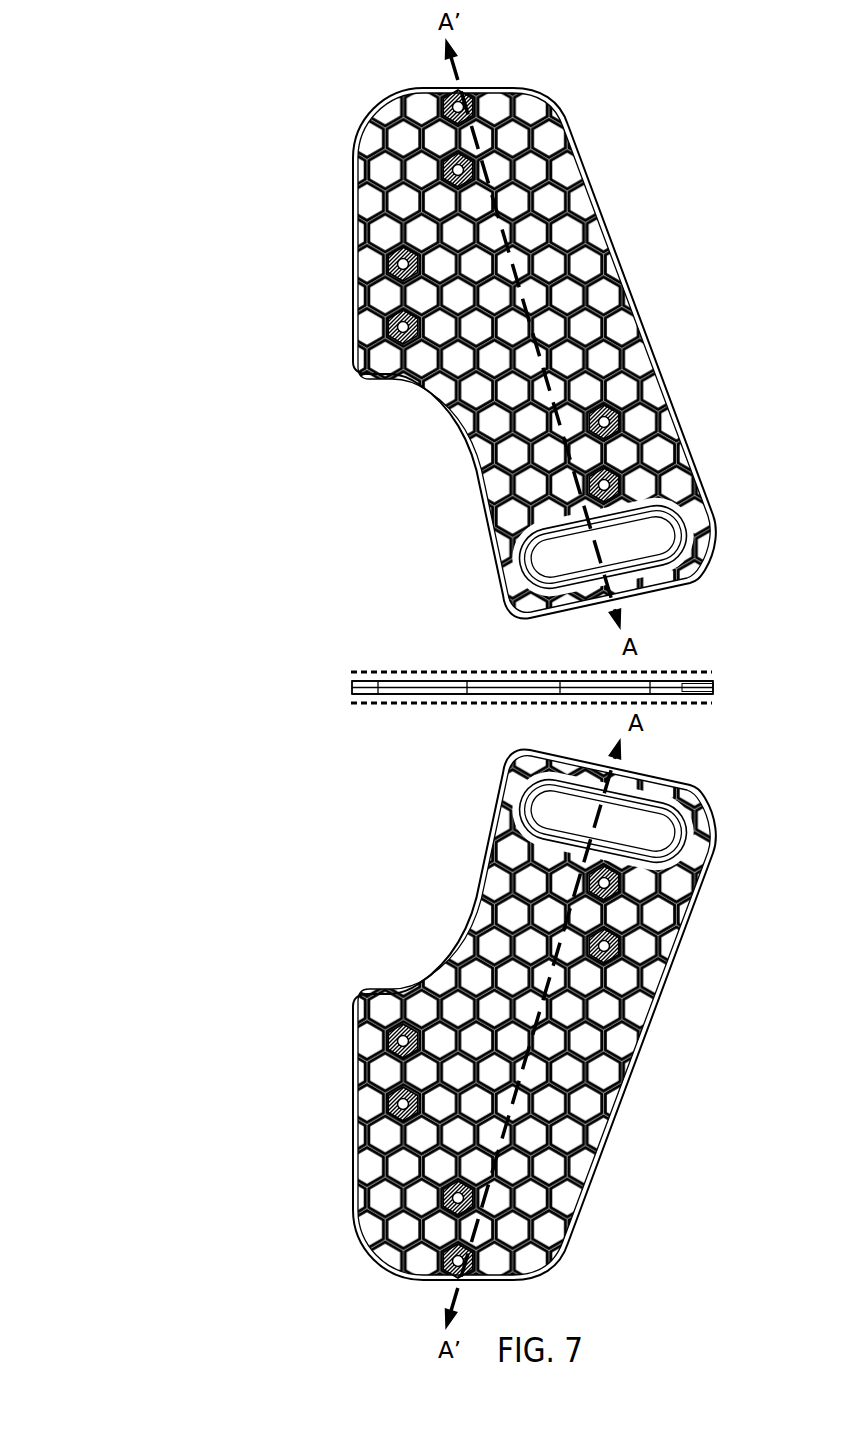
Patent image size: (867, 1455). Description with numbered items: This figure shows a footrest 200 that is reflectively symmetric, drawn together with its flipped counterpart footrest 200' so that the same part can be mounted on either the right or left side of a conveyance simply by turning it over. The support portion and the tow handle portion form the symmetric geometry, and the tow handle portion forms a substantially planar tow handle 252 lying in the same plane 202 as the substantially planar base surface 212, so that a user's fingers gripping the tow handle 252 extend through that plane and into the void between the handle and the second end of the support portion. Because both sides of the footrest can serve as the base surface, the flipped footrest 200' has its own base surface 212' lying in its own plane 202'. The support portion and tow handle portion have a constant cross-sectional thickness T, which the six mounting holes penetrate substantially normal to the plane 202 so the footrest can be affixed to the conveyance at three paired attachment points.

The footrest 200 is at (422, 353).
The footrest 200' is at (446, 1014).
The tow handle 252 is at (643, 688).
The plane 202 is at (514, 627).
The plane 202' is at (510, 756).
The base surface 212 is at (532, 636).
The base surface 212' is at (532, 747).
The cross-sectional thickness T is at (328, 688).